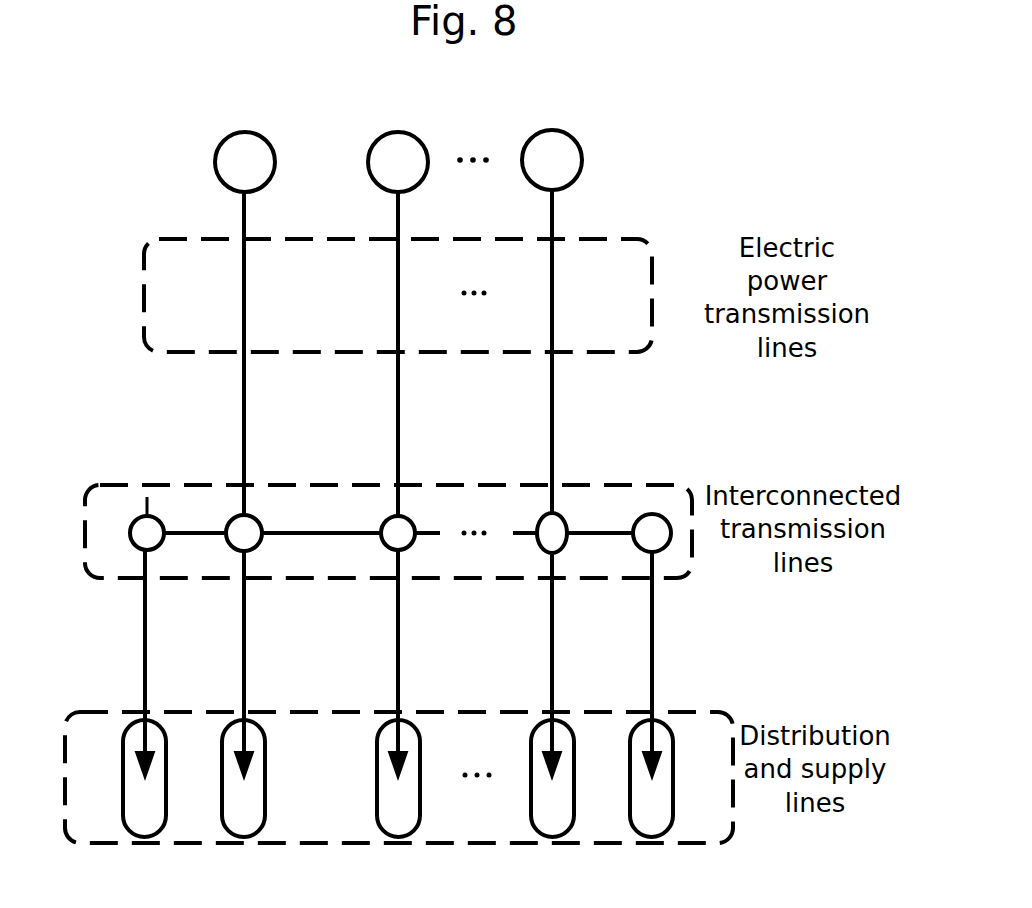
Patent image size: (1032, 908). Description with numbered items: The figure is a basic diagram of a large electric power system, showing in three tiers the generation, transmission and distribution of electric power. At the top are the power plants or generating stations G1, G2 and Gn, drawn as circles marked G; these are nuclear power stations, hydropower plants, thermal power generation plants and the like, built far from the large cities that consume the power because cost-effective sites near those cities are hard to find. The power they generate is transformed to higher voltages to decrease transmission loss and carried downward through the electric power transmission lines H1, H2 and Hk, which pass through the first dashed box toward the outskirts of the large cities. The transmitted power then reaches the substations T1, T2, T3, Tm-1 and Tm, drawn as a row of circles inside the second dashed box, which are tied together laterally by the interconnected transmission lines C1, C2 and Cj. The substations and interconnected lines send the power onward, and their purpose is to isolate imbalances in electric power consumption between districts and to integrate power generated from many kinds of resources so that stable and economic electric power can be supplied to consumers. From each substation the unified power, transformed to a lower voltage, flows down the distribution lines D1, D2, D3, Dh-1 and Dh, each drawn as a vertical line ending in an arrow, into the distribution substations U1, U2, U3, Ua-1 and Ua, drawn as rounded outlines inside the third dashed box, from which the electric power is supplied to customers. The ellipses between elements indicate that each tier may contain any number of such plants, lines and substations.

The power plant G1 is at (222, 147).
The power plant G2 is at (377, 147).
The power plant Gn is at (531, 141).
The electric power transmission line H1 is at (240, 213).
The electric power transmission line H2 is at (395, 213).
The electric power transmission line Hk is at (554, 204).
The substation T1 is at (147, 497).
The substation T2 is at (244, 495).
The substation T3 is at (398, 495).
The substation Tm-1 is at (552, 495).
The substation Tm is at (652, 495).
The interconnected transmission line C1 is at (197, 533).
The interconnected transmission line C2 is at (335, 533).
The interconnected transmission line Cj is at (600, 533).
The distribution line D1 is at (145, 635).
The distribution line D2 is at (244, 635).
The distribution line D3 is at (398, 635).
The distribution line Dh-1 is at (552, 635).
The distribution line Dh is at (652, 635).
The distribution substation U1 is at (145, 712).
The distribution substation U2 is at (244, 712).
The distribution substation U3 is at (398, 712).
The distribution substation Ua-1 is at (552, 712).
The distribution substation Ua is at (652, 712).